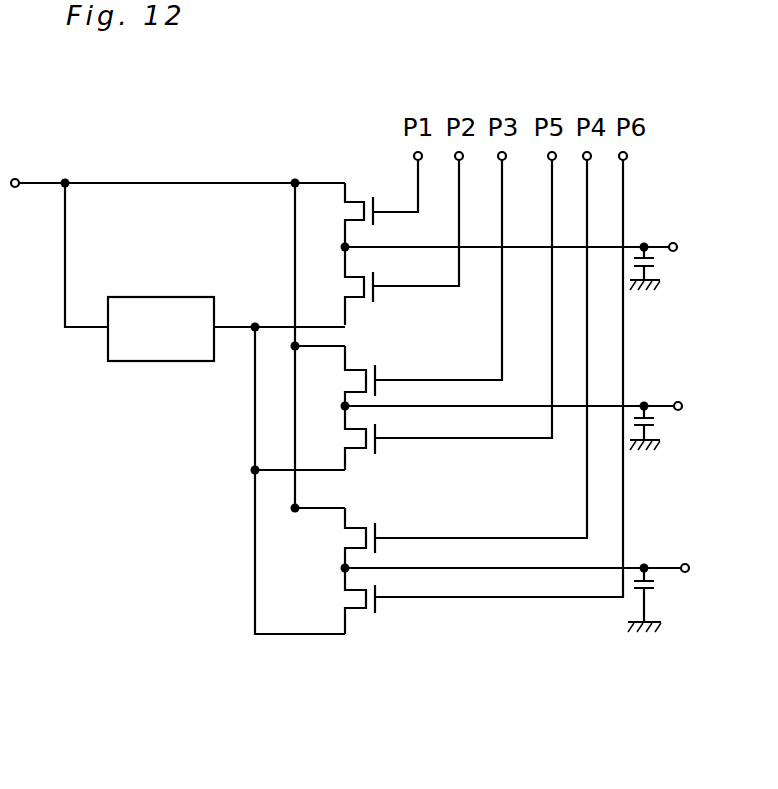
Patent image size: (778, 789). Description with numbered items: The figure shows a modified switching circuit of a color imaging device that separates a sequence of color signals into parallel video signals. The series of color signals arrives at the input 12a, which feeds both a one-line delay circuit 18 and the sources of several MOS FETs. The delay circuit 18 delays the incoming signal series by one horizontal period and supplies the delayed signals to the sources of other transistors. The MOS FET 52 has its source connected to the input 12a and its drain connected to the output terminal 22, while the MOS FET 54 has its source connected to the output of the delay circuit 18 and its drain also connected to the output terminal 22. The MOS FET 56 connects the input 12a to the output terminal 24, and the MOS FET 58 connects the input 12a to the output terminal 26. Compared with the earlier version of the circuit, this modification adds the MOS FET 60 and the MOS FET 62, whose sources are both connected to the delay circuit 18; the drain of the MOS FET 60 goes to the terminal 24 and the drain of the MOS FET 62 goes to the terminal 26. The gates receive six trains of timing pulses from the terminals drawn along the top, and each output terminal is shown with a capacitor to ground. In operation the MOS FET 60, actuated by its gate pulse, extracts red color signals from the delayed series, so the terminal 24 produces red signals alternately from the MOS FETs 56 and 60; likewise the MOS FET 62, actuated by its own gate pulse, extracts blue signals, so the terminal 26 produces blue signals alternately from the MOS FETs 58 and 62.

The input 12a is at (17, 178).
The 1H delay circuit 18 is at (193, 296).
The output terminal 22 is at (677, 244).
The output terminal 24 is at (681, 403).
The output terminal 26 is at (688, 564).
The MOS FET 52 is at (376, 203).
The MOS FET 54 is at (378, 279).
The MOS FET 56 is at (380, 368).
The MOS FET 58 is at (380, 529).
The MOS FET 60 is at (380, 450).
The MOS FET 62 is at (380, 607).